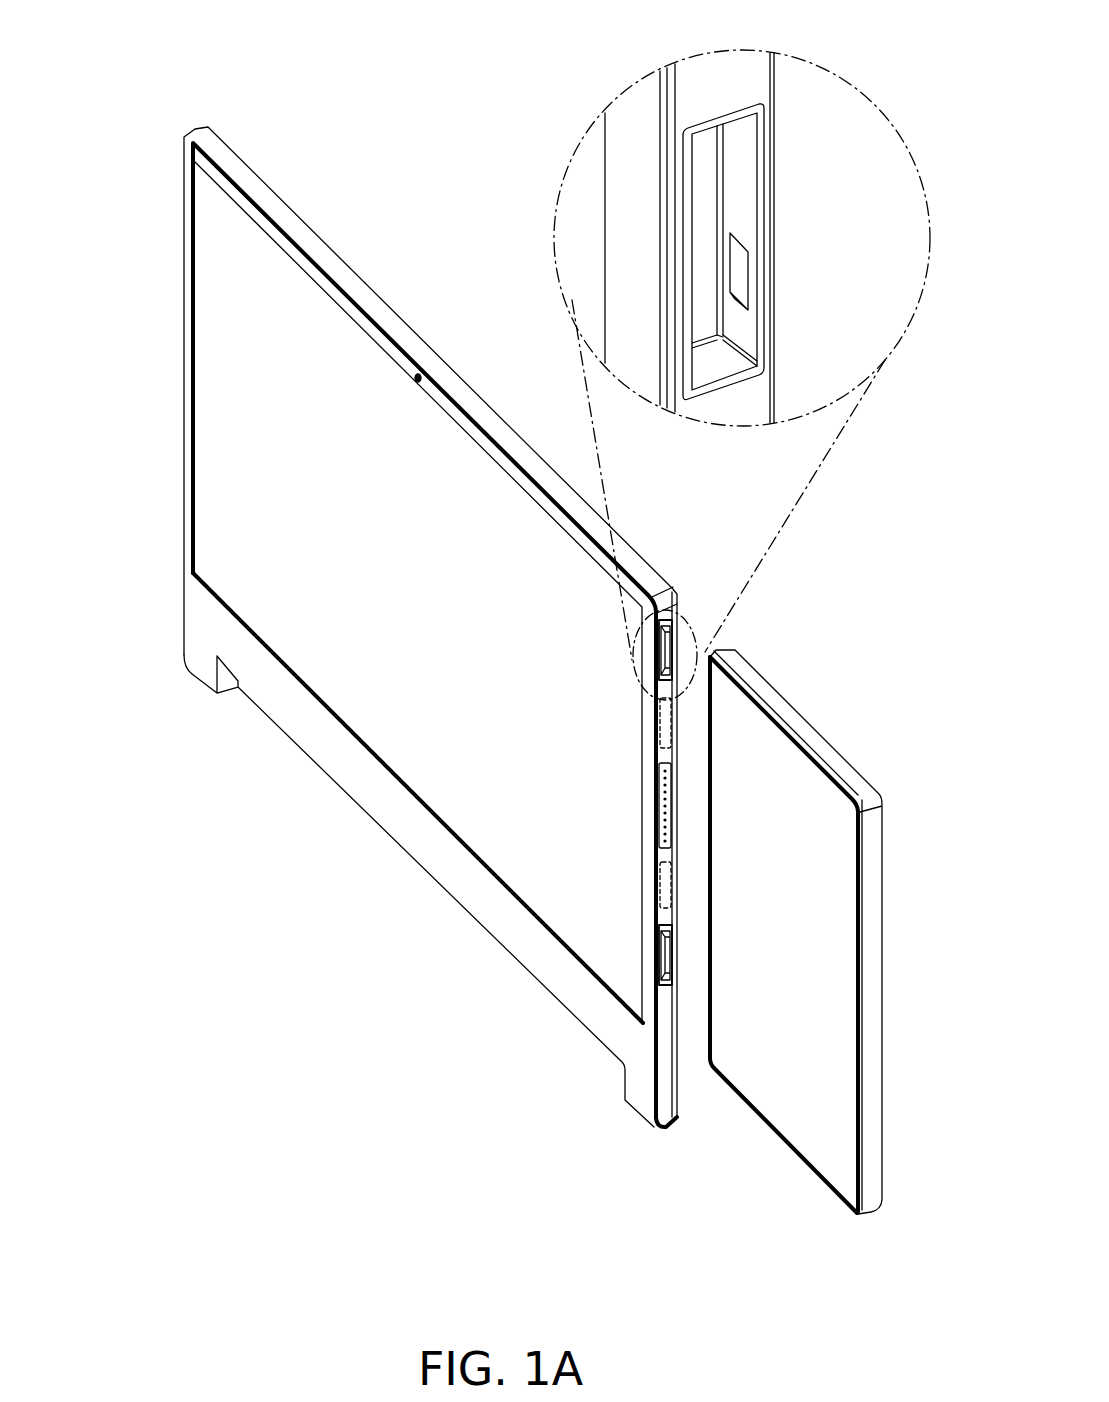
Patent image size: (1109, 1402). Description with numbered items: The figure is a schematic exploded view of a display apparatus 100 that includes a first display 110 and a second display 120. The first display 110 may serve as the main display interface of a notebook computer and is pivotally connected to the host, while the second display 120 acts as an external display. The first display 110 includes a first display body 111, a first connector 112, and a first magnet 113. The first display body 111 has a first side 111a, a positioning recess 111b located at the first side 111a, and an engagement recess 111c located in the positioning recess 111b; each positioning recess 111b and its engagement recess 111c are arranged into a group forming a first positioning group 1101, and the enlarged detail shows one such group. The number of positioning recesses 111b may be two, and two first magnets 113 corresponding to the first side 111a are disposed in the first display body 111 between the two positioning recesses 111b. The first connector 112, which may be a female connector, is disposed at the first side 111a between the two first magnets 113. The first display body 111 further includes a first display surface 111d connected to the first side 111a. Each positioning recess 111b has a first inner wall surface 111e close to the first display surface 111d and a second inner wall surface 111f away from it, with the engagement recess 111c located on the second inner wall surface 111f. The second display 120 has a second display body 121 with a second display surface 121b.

The display apparatus 100 is at (190, 1201).
The first display 110 is at (170, 378).
The first display body 111 is at (190, 633).
The first side 111a is at (741, 404).
The positioning recess 111b is at (703, 205).
The engagement recess 111c is at (735, 270).
The first display surface 111d is at (583, 188).
The first inner wall surface 111e is at (693, 177).
The second inner wall surface 111f is at (740, 219).
The first positioning group 1101 is at (831, 290).
The first connector 112 is at (655, 810).
The first magnet 113 is at (670, 720).
The second display 120 is at (898, 1066).
The second display body 121 is at (880, 1000).
The second display surface 121b is at (800, 1080).